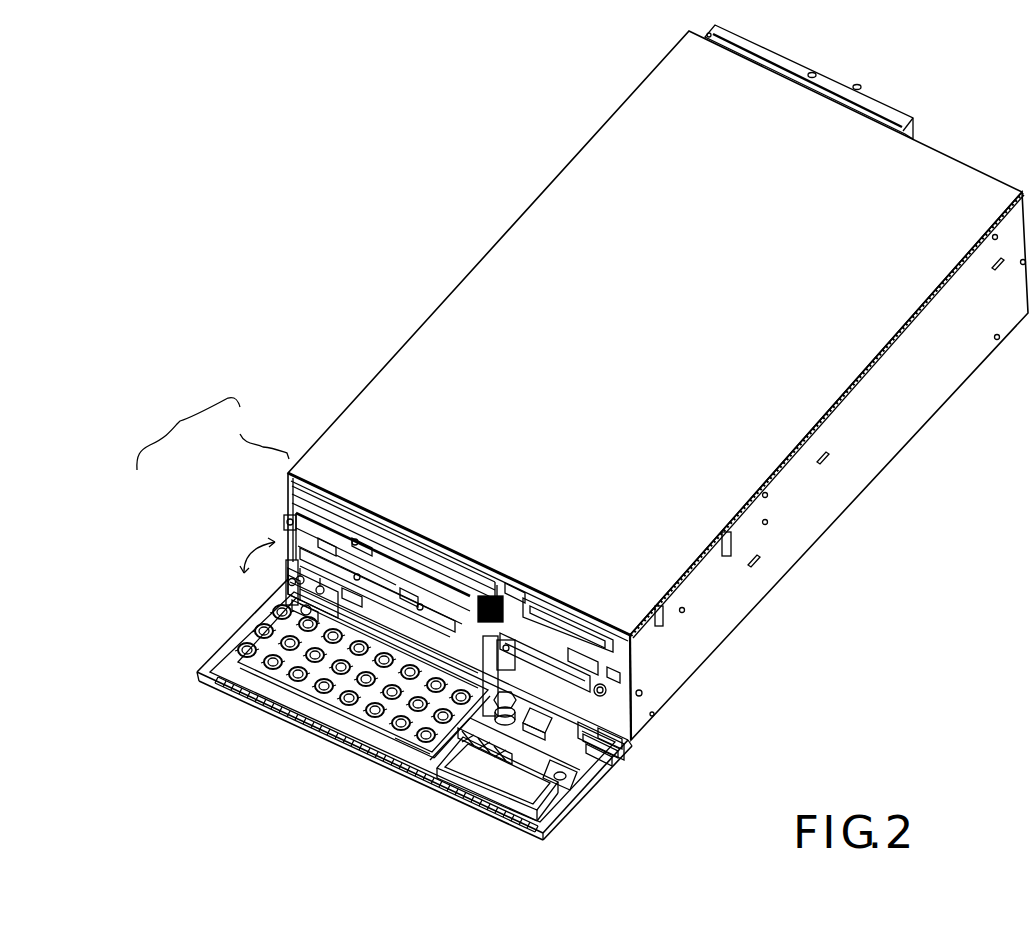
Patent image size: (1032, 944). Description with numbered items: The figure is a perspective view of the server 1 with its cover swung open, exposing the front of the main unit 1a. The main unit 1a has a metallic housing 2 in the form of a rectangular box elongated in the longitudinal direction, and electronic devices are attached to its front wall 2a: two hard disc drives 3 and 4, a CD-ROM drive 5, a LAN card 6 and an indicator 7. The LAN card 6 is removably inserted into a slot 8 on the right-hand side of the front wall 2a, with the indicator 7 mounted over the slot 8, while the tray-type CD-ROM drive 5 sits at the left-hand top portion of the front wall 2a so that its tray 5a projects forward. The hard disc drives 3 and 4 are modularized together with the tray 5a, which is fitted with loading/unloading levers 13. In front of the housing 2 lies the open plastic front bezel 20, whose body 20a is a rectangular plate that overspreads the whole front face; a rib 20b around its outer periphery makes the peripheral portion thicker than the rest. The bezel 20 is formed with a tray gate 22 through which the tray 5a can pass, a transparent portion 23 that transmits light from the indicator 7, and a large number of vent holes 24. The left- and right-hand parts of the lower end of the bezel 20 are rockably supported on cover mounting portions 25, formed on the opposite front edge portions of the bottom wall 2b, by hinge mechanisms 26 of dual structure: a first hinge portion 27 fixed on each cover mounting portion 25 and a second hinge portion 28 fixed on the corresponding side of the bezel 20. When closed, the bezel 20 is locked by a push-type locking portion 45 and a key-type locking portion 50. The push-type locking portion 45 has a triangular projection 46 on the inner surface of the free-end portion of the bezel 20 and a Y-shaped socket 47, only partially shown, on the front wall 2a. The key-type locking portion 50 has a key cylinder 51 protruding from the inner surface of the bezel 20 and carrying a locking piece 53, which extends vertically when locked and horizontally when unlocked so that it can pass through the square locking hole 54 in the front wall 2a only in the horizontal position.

The server 1 is at (188, 429).
The main unit 1a is at (253, 435).
The housing 2 is at (440, 345).
The front wall 2a is at (513, 594).
The bottom wall 2b is at (745, 612).
The hard disc drive 3 is at (337, 535).
The hard disc drive 4 is at (393, 580).
The CD-ROM drive 5 is at (435, 548).
The tray 5a is at (362, 550).
The LAN card 6 is at (580, 660).
The indicator 7 is at (585, 630).
The slot 8 is at (600, 697).
The loading/unloading levers 13 is at (287, 523).
The front bezel 20 is at (197, 672).
The body 20a is at (552, 813).
The rib 20b is at (522, 832).
The tray gate 22 is at (317, 717).
The transparent portion 23 is at (482, 780).
The vent holes 24 is at (272, 643).
The cover mounting portions 25 is at (353, 597).
The hinge mechanisms 26 is at (227, 527).
The first hinge portion 27 is at (287, 581).
The second hinge portion 28 is at (290, 612).
The push-type locking portion 45 is at (365, 748).
The triangular projection 46 is at (400, 742).
The Y-shaped socket 47 is at (505, 660).
The key-type locking portion 50 is at (510, 790).
The key cylinder 51 is at (508, 708).
The locking piece 53 is at (480, 740).
The locking hole 54 is at (570, 677).